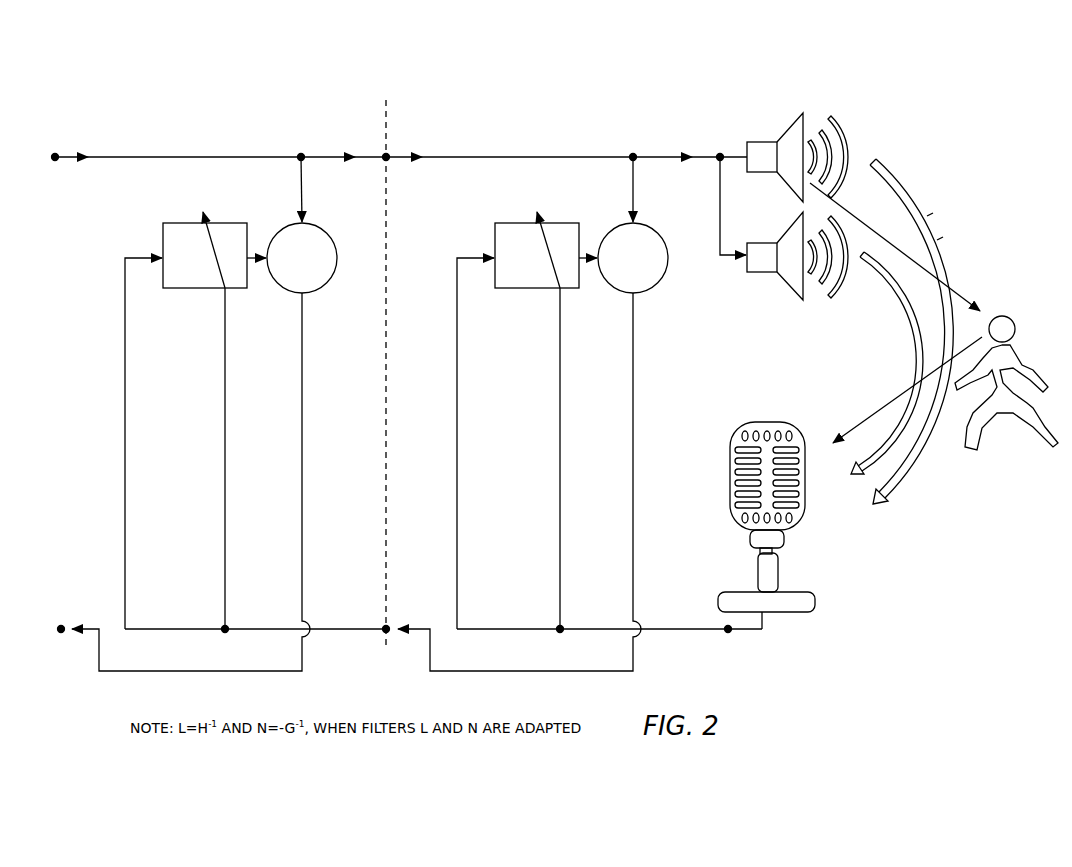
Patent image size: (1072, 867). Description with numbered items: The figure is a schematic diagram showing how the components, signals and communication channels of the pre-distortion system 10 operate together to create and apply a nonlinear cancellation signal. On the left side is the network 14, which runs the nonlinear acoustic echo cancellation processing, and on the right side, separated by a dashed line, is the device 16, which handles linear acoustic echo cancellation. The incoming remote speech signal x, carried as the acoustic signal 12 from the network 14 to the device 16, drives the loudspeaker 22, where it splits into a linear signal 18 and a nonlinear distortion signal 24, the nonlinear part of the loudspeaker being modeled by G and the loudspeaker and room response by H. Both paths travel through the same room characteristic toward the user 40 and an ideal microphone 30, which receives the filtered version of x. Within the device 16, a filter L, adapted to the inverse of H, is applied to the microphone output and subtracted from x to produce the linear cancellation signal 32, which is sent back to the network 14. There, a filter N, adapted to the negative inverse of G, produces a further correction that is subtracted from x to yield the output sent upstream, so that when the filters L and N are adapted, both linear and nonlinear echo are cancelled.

The pre-distortion system 10 is at (489, 50).
The acoustic signal 12 is at (919, 150).
The network 14 is at (120, 106).
The device 16 is at (607, 73).
The linear signal 18 is at (942, 240).
The loudspeaker 22 is at (767, 142).
The nonlinear distortion signal 24 is at (911, 333).
The microphone 30 is at (732, 491).
The linear cancellation signal 32 is at (531, 672).
The user 40 is at (975, 451).